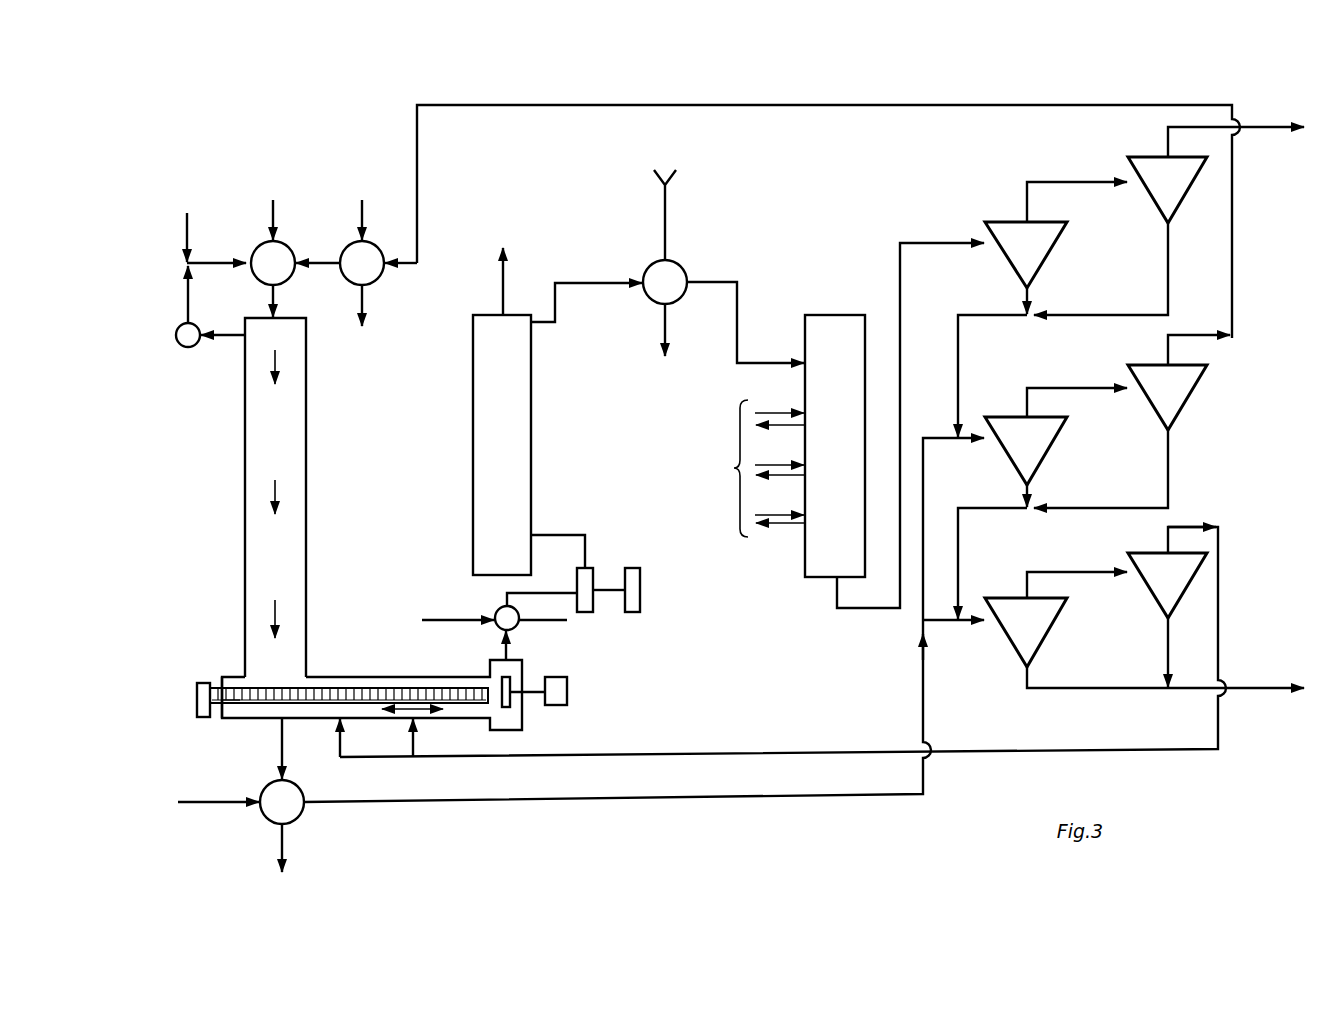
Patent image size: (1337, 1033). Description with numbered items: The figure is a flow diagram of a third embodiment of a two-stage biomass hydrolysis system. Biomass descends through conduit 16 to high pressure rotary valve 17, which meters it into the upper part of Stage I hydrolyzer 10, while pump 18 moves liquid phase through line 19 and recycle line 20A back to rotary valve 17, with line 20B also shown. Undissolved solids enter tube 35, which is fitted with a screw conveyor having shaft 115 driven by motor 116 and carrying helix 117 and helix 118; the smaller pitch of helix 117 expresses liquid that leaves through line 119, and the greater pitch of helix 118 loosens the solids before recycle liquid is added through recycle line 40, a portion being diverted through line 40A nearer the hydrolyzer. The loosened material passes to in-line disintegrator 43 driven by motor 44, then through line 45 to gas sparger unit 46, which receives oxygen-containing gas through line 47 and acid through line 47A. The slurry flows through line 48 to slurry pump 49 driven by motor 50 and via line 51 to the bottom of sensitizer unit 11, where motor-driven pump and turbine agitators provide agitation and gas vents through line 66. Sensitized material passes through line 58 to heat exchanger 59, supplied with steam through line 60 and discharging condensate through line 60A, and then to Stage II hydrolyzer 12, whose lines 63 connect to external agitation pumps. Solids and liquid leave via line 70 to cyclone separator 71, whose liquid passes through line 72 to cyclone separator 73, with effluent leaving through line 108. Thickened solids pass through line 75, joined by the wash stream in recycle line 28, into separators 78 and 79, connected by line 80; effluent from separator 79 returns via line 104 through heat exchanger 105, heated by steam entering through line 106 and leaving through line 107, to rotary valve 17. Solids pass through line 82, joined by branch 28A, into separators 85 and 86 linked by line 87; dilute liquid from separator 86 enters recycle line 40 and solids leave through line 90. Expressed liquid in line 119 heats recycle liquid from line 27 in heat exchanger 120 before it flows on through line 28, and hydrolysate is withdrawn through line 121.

The Stage I hydrolyzer 10 is at (312, 422).
The sensitizer unit 11 is at (460, 416).
The Stage II hydrolyzer 12 is at (797, 336).
The conduit 16 is at (275, 222).
The high pressure rotary valve 17 is at (263, 276).
The pump 18 is at (174, 338).
The line 19 is at (222, 343).
The recycle line 20A is at (213, 262).
The line 20B is at (188, 228).
The aqueous recycle stream line 27 is at (188, 800).
The recycle line 28 is at (392, 800).
The branch of recycle line 28A is at (961, 629).
The tube 35 is at (331, 675).
The recycle line 40 is at (588, 756).
The diverted recycle line 40A is at (350, 749).
The in-line disintegrator 43 is at (514, 686).
The motor 44 is at (568, 700).
The line 45 is at (500, 642).
The gas sparger unit 46 is at (498, 614).
The line 47 is at (445, 620).
The line 47A is at (550, 624).
The line 48 is at (553, 592).
The slurry pump 49 is at (602, 574).
The motor 50 is at (641, 590).
The line 51 is at (568, 530).
The line 58 is at (568, 281).
The heat exchanger 59 is at (655, 295).
The steam line 60 is at (663, 212).
The line 60A is at (670, 345).
The lines 63 is at (752, 468).
The vent line 66 is at (498, 275).
The line 70 is at (874, 608).
The cyclone separator 71 is at (1017, 261).
The line 72 is at (1068, 180).
The cyclone separator 73 is at (1158, 196).
The line 75 is at (972, 314).
The cyclone separator 78 is at (1017, 456).
The cyclone separator 79 is at (1158, 404).
The line 80 is at (1074, 388).
The line 82 is at (1000, 505).
The cyclone separator 85 is at (1017, 637).
The cyclone separator 86 is at (1158, 592).
The line 87 is at (1094, 568).
The line 90 is at (1254, 682).
The line 104 is at (552, 104).
The heat exchanger 105 is at (352, 276).
The steam line 106 is at (363, 218).
The line 107 is at (366, 300).
The line 108 is at (1264, 122).
The shaft 115 is at (227, 716).
The motor 116 is at (196, 704).
The helix 117 is at (242, 684).
The helix 118 is at (440, 686).
The line 119 is at (281, 745).
The heat exchanger 120 is at (270, 815).
The line 121 is at (284, 838).